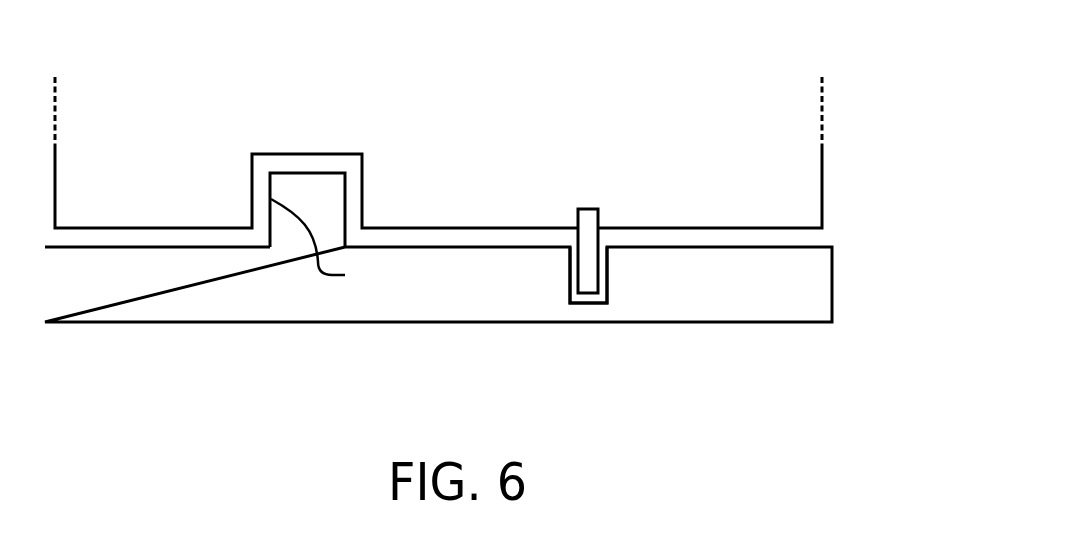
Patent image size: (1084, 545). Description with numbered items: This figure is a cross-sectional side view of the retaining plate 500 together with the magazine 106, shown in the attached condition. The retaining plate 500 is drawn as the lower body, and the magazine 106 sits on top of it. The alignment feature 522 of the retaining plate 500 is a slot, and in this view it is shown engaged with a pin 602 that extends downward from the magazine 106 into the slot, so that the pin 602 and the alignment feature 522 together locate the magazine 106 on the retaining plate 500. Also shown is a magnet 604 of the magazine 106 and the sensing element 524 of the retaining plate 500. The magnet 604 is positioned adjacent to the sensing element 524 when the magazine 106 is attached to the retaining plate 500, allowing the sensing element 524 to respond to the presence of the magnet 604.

The magazine 106 is at (847, 127).
The retaining plate 500 is at (832, 262).
The alignment feature 522 is at (568, 275).
The sensing element 524 is at (332, 244).
The pin 602 is at (598, 210).
The magnet 604 is at (297, 153).